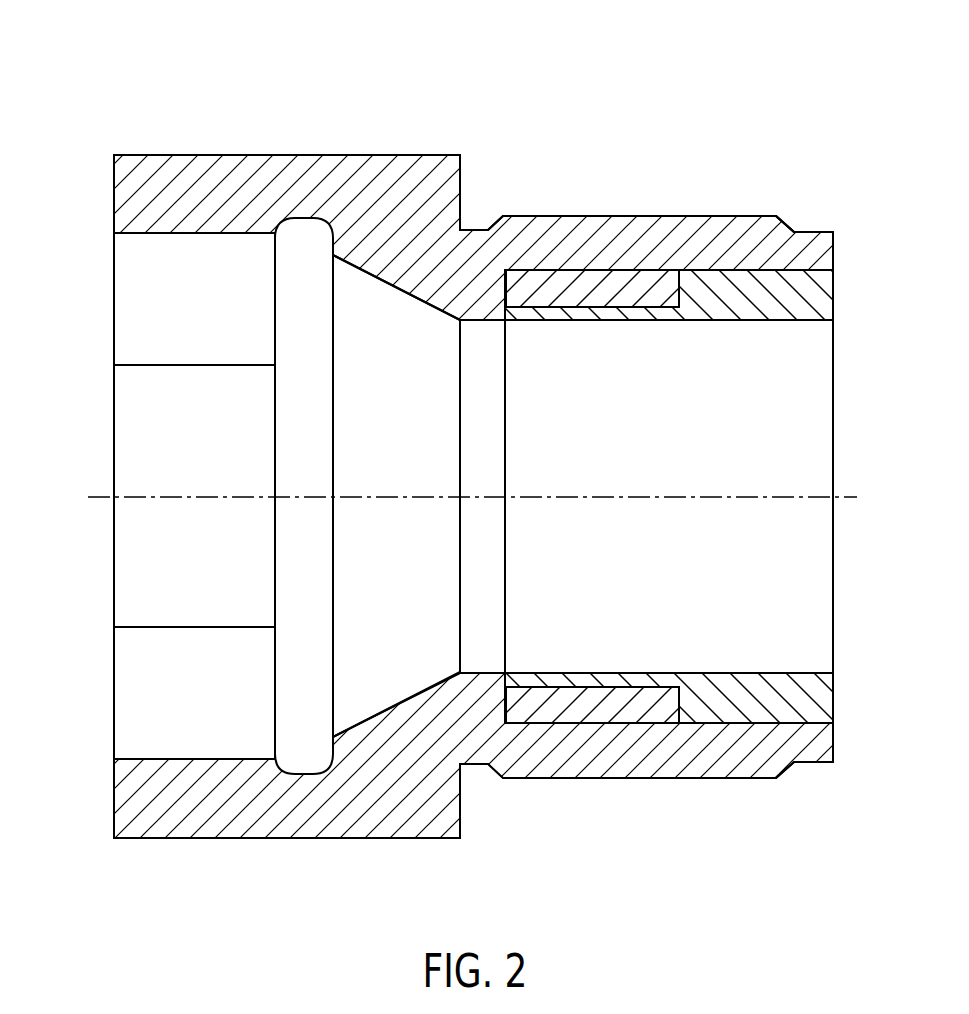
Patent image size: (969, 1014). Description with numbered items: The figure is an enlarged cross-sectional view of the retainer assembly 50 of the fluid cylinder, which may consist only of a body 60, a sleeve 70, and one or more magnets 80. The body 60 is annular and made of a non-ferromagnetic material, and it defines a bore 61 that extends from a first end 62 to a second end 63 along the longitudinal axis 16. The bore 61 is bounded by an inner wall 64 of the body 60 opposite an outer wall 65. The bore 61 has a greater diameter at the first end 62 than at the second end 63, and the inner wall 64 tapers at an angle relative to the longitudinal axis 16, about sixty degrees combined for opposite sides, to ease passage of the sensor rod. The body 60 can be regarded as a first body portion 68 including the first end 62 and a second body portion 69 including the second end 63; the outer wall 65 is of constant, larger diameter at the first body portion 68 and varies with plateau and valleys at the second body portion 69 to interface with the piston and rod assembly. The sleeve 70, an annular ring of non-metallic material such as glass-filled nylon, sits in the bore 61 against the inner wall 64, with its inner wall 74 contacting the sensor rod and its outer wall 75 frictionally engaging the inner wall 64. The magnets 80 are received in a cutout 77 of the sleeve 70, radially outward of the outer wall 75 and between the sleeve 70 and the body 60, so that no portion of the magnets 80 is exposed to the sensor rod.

The longitudinal axis 16 is at (843, 497).
The retainer assembly 50 is at (119, 93).
The body 60 is at (135, 808).
The bore 61 is at (138, 542).
The first end 62 is at (114, 195).
The second end 63 is at (835, 745).
The inner wall 64 is at (148, 757).
The outer wall 65 is at (530, 216).
The first body portion 68 is at (330, 116).
The second body portion 69 is at (637, 116).
The sleeve 70 is at (815, 300).
The inner wall of the sleeve 74 is at (803, 321).
The outer wall of the sleeve 75 is at (803, 268).
The cutout 77 is at (677, 266).
The magnet 80 is at (607, 280).